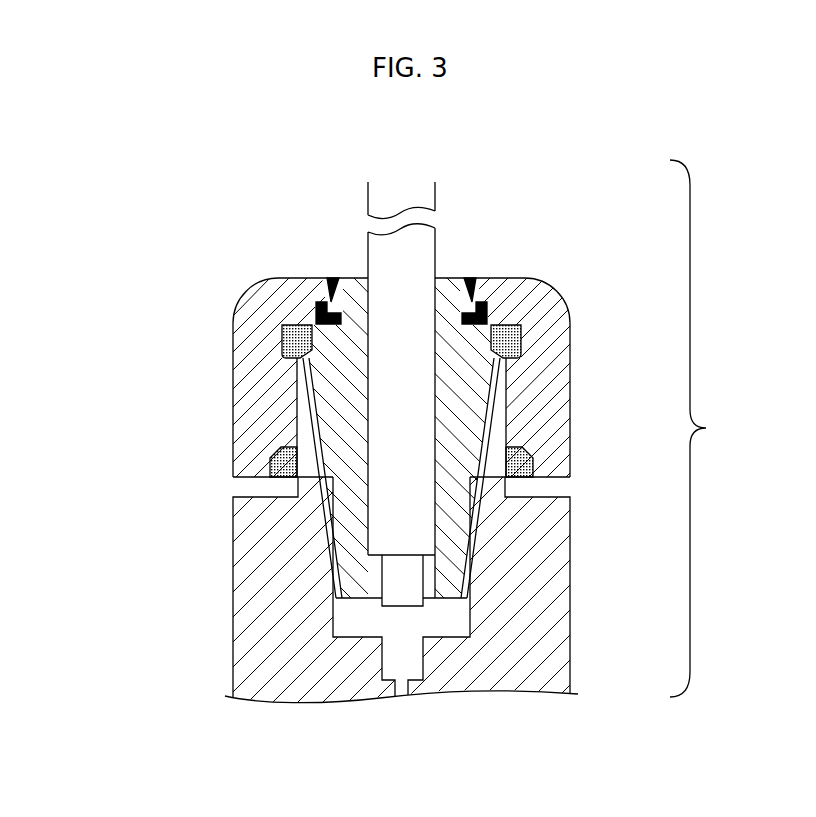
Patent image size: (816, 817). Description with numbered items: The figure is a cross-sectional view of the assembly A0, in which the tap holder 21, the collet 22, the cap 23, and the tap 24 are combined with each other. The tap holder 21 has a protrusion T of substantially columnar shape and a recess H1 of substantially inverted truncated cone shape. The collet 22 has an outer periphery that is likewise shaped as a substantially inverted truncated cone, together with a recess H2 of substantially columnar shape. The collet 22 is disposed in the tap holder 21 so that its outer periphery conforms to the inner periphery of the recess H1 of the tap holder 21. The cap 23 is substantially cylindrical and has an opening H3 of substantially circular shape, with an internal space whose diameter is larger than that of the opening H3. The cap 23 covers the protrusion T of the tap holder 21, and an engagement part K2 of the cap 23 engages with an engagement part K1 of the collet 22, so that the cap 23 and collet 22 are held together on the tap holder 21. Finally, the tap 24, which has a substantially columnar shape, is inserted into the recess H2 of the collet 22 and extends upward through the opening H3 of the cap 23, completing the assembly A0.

The tap holder 21 is at (570, 653).
The collet 22 is at (465, 418).
The cap 23 is at (543, 287).
The tap 24 is at (435, 252).
The assembly A0 is at (706, 428).
The recess H1 is at (327, 510).
The recess H2 is at (365, 391).
The opening H3 is at (329, 276).
The engagement part K1 is at (303, 316).
The engagement part K2 is at (304, 309).
The protrusion T is at (298, 421).